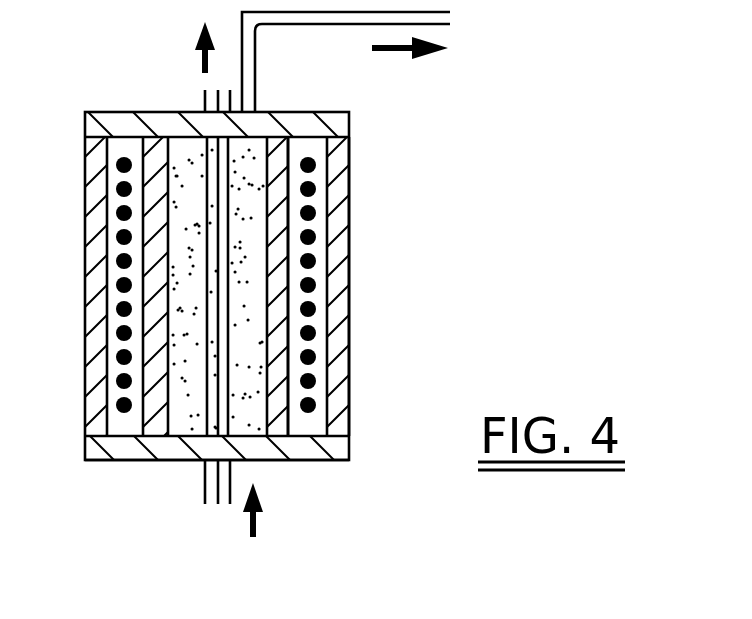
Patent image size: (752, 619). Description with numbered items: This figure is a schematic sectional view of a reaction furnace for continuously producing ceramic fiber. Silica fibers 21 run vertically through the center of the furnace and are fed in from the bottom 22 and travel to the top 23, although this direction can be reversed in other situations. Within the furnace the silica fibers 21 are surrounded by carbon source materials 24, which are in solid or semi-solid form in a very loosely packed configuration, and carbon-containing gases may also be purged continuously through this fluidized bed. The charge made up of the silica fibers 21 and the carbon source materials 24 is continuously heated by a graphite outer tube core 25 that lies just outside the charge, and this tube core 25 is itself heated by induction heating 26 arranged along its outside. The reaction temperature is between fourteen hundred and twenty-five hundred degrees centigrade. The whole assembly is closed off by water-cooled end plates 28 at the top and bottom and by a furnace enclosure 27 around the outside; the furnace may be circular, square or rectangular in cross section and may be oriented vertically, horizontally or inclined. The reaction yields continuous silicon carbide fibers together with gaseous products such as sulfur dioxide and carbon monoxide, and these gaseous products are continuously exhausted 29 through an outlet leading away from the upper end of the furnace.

The silica fibers 21 is at (228, 207).
The bottom 22 is at (260, 518).
The top 23 is at (200, 58).
The carbon source materials 24 is at (183, 303).
The graphite outer tube core 25 is at (280, 253).
The induction heating 26 is at (118, 212).
The furnace enclosure 27 is at (343, 313).
The water-cooled end plates 28 is at (302, 452).
The exhaust of gaseous products 29 is at (402, 48).